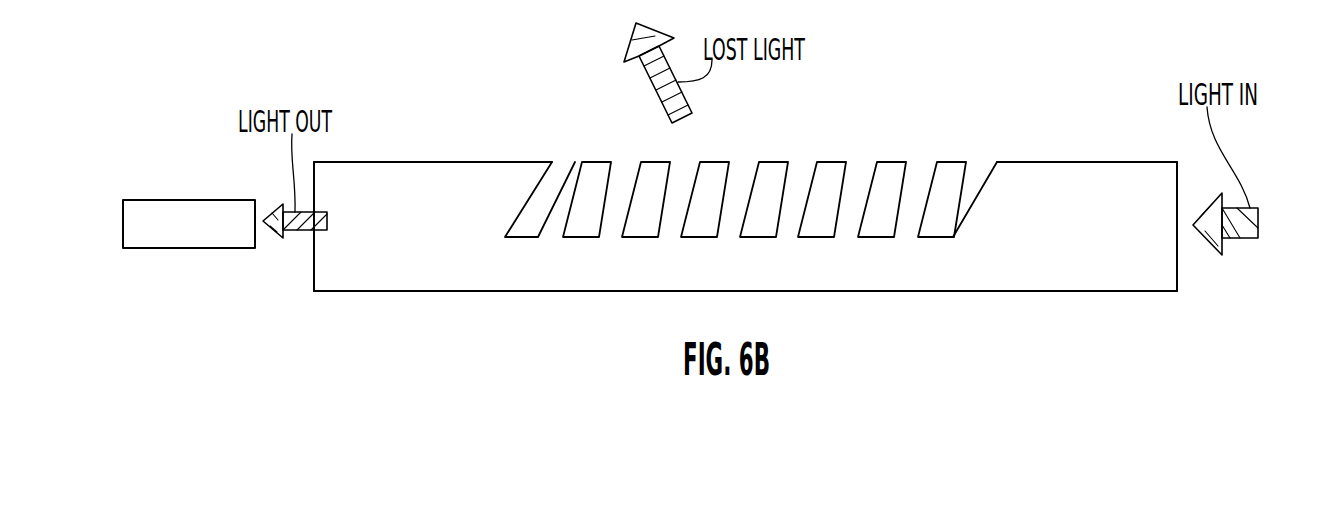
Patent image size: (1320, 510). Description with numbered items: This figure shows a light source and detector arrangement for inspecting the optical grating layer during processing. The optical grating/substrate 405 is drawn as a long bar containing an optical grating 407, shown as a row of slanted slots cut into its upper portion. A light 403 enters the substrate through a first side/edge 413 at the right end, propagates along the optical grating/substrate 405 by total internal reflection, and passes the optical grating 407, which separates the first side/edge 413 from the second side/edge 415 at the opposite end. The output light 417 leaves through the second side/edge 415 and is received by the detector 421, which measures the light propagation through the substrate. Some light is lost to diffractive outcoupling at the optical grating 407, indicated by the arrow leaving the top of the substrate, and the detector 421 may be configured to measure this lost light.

The light 403 is at (1230, 240).
The optical grating layer/substrate 405 is at (1053, 102).
The optical grating 407 is at (889, 157).
The first side/edge 413 is at (1178, 268).
The second side/edge 415 is at (312, 280).
The output light 417 is at (305, 232).
The detector 421 is at (190, 199).